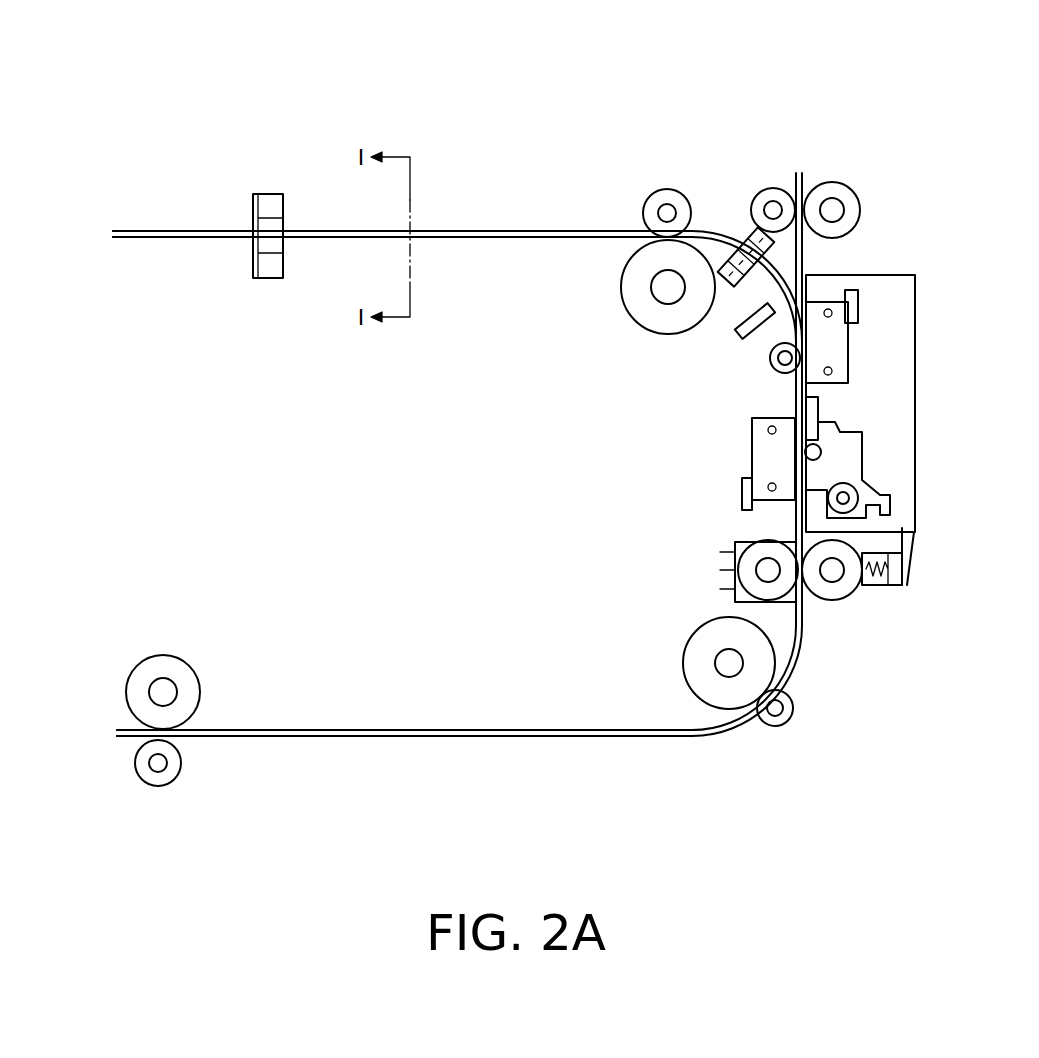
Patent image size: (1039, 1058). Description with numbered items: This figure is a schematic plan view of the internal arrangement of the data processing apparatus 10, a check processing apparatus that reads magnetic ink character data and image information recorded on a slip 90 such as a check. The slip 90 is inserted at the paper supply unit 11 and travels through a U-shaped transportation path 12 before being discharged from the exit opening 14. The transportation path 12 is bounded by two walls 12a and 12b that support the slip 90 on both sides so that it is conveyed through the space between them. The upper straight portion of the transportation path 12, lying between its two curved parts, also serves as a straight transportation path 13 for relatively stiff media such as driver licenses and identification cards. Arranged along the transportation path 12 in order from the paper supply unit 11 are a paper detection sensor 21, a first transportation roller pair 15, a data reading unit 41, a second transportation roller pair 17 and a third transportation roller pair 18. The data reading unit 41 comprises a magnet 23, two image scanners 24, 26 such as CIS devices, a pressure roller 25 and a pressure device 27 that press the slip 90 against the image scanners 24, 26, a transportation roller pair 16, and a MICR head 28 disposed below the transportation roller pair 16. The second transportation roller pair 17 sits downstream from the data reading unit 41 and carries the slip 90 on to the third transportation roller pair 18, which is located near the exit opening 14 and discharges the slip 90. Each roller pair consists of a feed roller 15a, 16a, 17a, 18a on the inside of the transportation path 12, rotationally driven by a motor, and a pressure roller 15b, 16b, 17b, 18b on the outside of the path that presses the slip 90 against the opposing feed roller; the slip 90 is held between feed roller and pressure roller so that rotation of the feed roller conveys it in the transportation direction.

The data processing apparatus 10 is at (937, 278).
The paper supply unit 11 is at (177, 230).
The U-shaped transportation path 12 is at (527, 240).
The wall 12a is at (450, 240).
The wall 12b is at (450, 231).
The straight transportation path 13 is at (803, 254).
The exit opening 14 is at (120, 728).
The first transportation roller pair 15 is at (565, 103).
The feed roller 15a is at (620, 272).
The pressure roller 15b is at (668, 190).
The transportation roller pair 16 is at (943, 633).
The feed roller 16a is at (807, 613).
The pressure roller 16b is at (848, 600).
The second transportation roller pair 17 is at (677, 818).
The feed roller 17a is at (705, 701).
The pressure roller 17b is at (775, 730).
The third transportation roller pair 18 is at (320, 583).
The feed roller 18a is at (165, 656).
The pressure roller 18b is at (182, 763).
The paper detection sensor 21 is at (270, 194).
The magnet 23 is at (740, 330).
The image scanner 24 is at (833, 342).
The pressure roller 25 is at (770, 362).
The image scanner 26 is at (755, 467).
The pressure device 27 is at (852, 450).
The MICR head 28 is at (735, 547).
The data reading unit 41 is at (930, 522).
The slip 90 is at (300, 240).